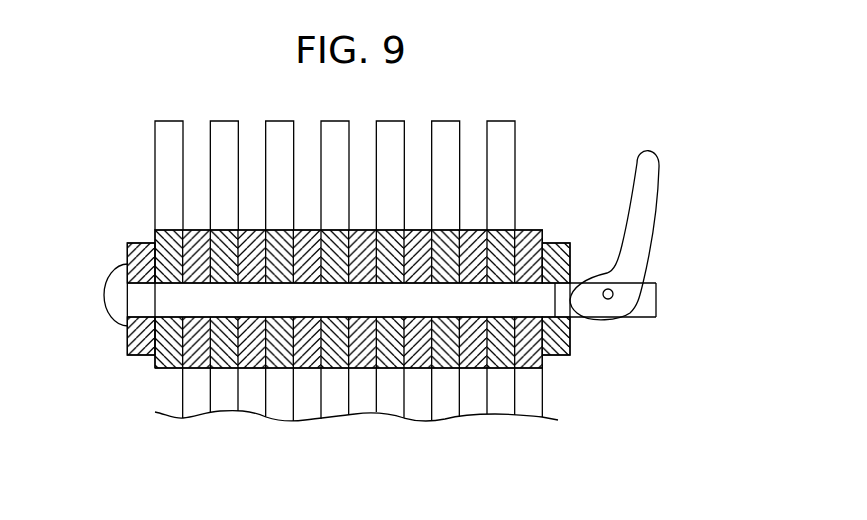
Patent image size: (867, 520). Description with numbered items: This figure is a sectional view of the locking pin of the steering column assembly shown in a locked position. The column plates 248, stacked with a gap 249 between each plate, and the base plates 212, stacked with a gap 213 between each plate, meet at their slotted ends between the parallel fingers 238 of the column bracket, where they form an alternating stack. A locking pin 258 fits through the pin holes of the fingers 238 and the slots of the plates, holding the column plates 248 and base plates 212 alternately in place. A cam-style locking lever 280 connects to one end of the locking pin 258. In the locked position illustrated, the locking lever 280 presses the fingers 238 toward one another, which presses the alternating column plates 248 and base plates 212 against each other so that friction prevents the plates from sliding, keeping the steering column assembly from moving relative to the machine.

The gap 249 is at (250, 142).
The column plates 248 is at (497, 142).
The gap 213 is at (283, 393).
The base plates 212 is at (528, 398).
The locking pin 258 is at (141, 297).
The fingers 238 is at (128, 343).
The locking lever 280 is at (650, 171).